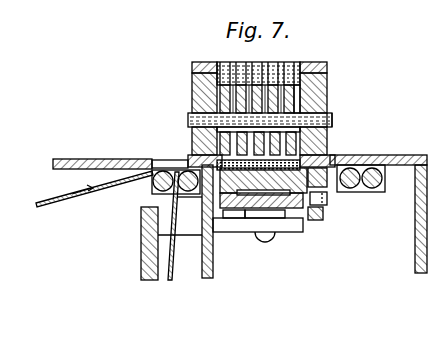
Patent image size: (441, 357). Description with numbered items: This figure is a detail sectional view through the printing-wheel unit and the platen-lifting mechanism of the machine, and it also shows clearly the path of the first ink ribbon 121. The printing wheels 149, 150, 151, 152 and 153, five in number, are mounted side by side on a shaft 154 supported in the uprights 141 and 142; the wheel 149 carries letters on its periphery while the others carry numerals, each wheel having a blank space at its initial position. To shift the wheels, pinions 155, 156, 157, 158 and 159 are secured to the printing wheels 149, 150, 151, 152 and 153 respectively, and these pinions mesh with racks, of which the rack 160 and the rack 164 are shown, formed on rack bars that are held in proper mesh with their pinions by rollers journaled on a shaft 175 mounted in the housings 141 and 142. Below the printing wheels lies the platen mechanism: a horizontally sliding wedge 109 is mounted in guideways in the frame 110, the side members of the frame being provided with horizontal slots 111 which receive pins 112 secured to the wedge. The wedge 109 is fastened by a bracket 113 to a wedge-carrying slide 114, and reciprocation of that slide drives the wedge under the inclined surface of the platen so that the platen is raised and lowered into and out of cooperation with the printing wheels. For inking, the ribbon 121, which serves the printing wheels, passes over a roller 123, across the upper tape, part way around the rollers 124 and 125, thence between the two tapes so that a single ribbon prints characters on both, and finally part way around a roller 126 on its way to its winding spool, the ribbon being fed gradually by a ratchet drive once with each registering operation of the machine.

The wedge 109 is at (300, 215).
The frame 110 is at (212, 215).
The horizontal slots 111 is at (425, 222).
The pins 112 is at (212, 203).
The bracket 113 is at (239, 234).
The wedge-carrying slide 114 is at (140, 244).
The ink ribbon 121 is at (95, 193).
The roller 123 is at (152, 188).
The roller 124 is at (377, 187).
The roller 125 is at (362, 193).
The roller 126 is at (172, 192).
The upright 141 is at (220, 94).
The upright 142 is at (295, 88).
The printing wheel 149 is at (292, 78).
The printing wheel 150 is at (278, 86).
The printing wheel 151 is at (262, 86).
The printing wheel 152 is at (248, 86).
The printing wheel 153 is at (232, 83).
The shaft 154 is at (331, 122).
The pinion 155 is at (323, 92).
The pinion 156 is at (330, 110).
The pinion 157 is at (225, 134).
The pinion 158 is at (245, 118).
The pinion 159 is at (215, 112).
The rack 160 is at (323, 74).
The rack 164 is at (200, 82).
The shaft 175 is at (318, 68).